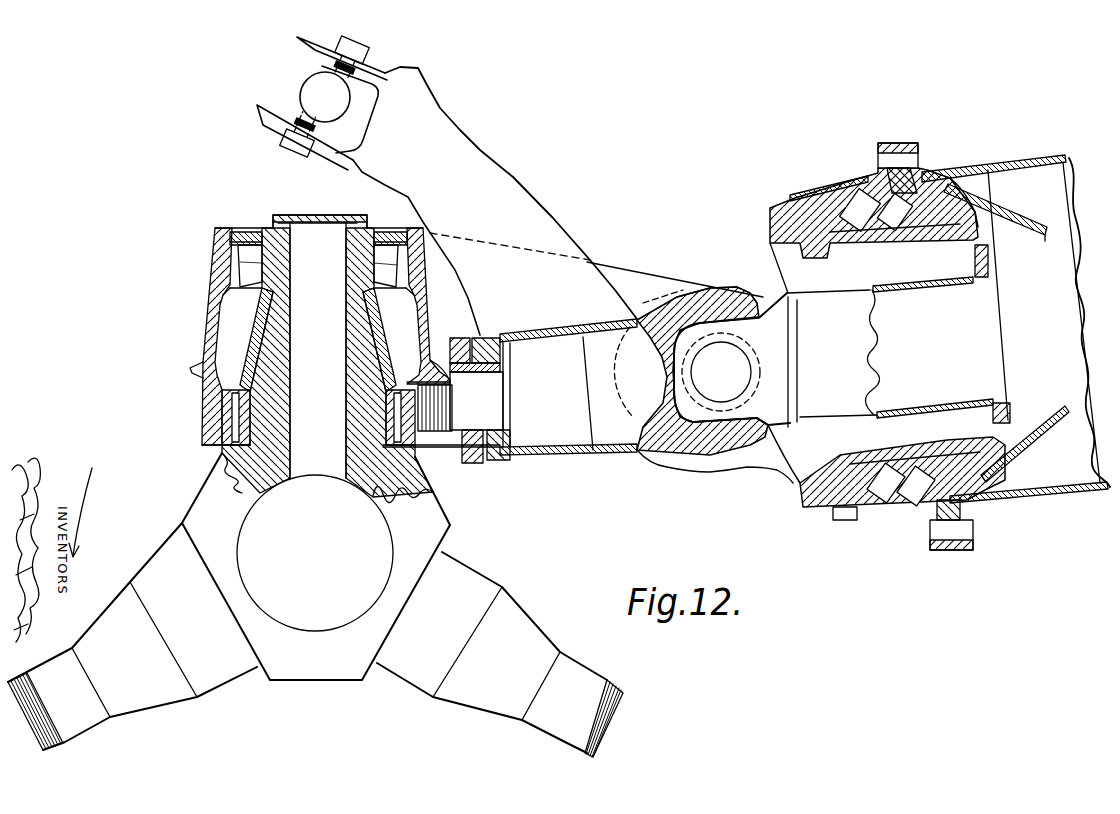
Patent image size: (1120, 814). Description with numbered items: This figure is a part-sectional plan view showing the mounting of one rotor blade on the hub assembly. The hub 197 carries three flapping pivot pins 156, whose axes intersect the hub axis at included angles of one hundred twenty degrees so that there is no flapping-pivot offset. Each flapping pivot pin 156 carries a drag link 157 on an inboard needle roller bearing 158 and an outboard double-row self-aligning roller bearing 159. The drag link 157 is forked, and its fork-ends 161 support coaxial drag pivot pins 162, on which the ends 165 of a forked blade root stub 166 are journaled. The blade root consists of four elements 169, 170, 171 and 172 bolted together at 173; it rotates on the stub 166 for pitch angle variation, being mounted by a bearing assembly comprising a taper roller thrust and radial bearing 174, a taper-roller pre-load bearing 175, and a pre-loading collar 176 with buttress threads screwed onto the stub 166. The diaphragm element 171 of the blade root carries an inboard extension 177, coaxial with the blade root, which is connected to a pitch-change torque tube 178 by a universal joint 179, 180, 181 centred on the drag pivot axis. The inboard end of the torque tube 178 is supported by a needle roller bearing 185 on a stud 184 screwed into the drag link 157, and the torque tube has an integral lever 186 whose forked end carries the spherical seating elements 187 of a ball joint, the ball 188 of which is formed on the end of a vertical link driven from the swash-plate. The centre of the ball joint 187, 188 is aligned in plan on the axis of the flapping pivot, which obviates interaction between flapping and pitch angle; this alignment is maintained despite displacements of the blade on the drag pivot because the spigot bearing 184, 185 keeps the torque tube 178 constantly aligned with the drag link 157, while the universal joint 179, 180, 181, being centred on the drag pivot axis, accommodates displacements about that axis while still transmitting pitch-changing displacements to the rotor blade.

The flapping pivot pin 156 is at (197, 372).
The drag link 157 is at (210, 316).
The inboard needle roller bearing 158 is at (222, 418).
The outboard double-row self-aligning roller bearing 159 is at (243, 268).
The fork-ends 161 is at (623, 280).
The drag pivot pin 162 is at (762, 368).
The ends of blade root stub 165 is at (710, 472).
The blade root stub 166 is at (870, 247).
The blade root element 169 is at (963, 170).
The blade root element 170 is at (1043, 233).
The diaphragm element 171 is at (983, 232).
The blade root element 172 is at (868, 181).
The bolt 173 is at (903, 157).
The taper roller thrust and radial bearing 174 is at (923, 480).
The taper-roller pre-load bearing 175 is at (883, 487).
The pre-loading collar 176 is at (925, 220).
The inboard extension 177 is at (820, 317).
The pitch-change torque tube 178 is at (565, 460).
The universal joint 179 is at (667, 458).
The universal joint 180 is at (767, 332).
The universal joint 181 is at (712, 310).
The stud 184 is at (490, 392).
The needle roller bearing 185 is at (488, 458).
The lever 186 is at (488, 198).
The spherical seating elements 187 is at (375, 67).
The ball 188 is at (312, 92).
The hub 197 is at (323, 668).